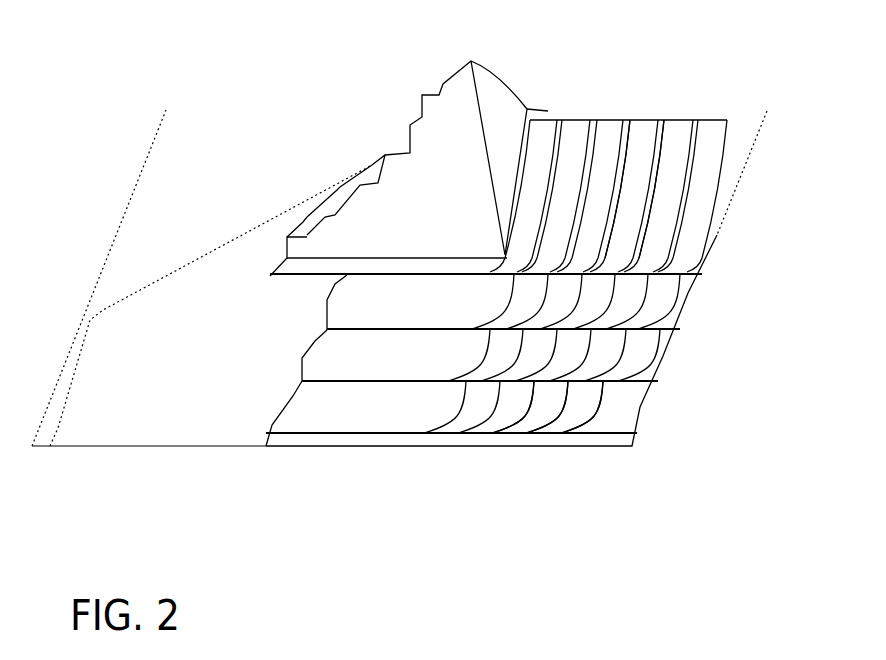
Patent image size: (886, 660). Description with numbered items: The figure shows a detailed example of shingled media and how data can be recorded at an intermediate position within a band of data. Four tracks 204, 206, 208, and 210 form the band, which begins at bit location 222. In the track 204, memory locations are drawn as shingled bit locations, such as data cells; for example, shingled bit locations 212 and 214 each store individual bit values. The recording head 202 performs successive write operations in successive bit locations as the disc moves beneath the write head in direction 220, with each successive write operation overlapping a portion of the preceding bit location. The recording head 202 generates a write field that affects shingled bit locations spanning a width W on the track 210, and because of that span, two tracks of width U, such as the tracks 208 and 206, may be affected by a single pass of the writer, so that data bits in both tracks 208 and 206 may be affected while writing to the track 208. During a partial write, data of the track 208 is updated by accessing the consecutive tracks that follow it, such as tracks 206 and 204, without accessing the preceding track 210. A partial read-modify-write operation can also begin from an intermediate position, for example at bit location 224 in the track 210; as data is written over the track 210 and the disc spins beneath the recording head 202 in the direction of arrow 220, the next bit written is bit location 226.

The recording head 202 is at (492, 105).
The track 204 is at (637, 407).
The track 206 is at (662, 356).
The track 208 is at (690, 293).
The track 210 is at (717, 183).
The shingled bit location 212 is at (525, 433).
The shingled bit location 214 is at (567, 433).
The direction 220 is at (762, 73).
The bit location 222 is at (608, 423).
The bit location 224 is at (672, 157).
The bit location 226 is at (635, 180).